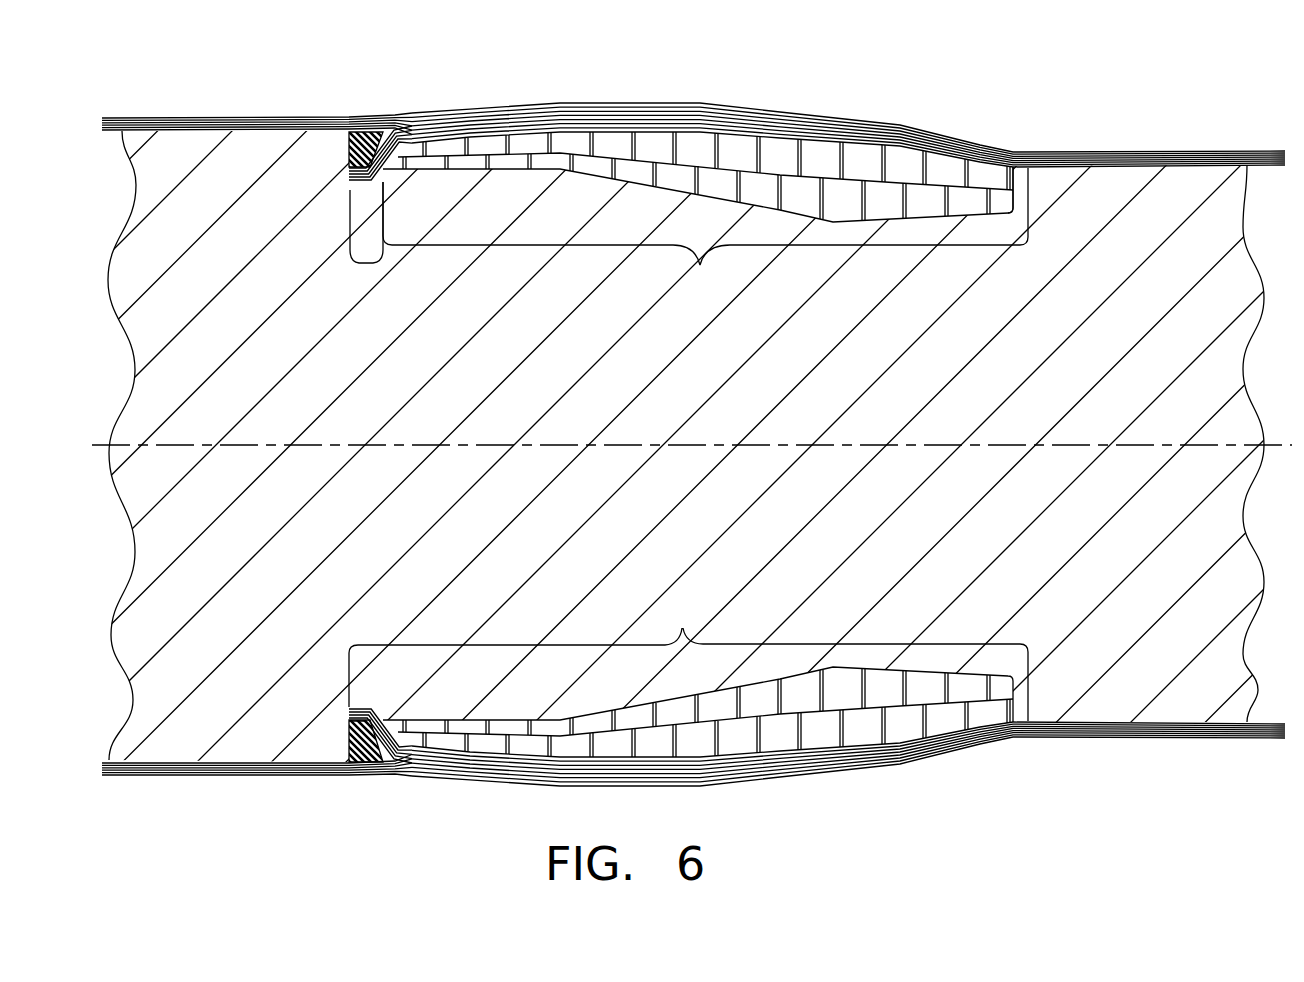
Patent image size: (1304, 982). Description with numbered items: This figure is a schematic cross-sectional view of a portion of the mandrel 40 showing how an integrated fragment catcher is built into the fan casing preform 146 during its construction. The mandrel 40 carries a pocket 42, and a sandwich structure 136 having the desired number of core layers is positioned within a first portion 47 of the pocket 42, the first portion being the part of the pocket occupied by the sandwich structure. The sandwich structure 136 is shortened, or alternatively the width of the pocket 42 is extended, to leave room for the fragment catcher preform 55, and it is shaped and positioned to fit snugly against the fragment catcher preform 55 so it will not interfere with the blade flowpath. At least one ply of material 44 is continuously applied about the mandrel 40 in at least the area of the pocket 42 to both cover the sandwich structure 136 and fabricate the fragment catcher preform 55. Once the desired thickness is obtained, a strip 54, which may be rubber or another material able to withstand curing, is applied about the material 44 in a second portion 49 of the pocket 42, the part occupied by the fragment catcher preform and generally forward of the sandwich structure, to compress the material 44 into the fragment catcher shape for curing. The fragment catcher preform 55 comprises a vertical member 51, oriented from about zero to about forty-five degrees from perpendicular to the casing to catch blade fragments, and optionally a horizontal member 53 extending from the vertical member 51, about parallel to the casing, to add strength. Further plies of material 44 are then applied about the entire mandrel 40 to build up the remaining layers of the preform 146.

The mandrel 40 is at (1123, 308).
The pocket 42 is at (683, 628).
The material 44 is at (374, 130).
The first portion 47 is at (700, 265).
The second portion 49 is at (365, 263).
The vertical member 51 is at (348, 150).
The horizontal member 53 is at (367, 184).
The strip 54 is at (366, 130).
The fragment catcher preform 55 is at (340, 710).
The sandwich structure 136 is at (1028, 188).
The preform 146 is at (1057, 96).